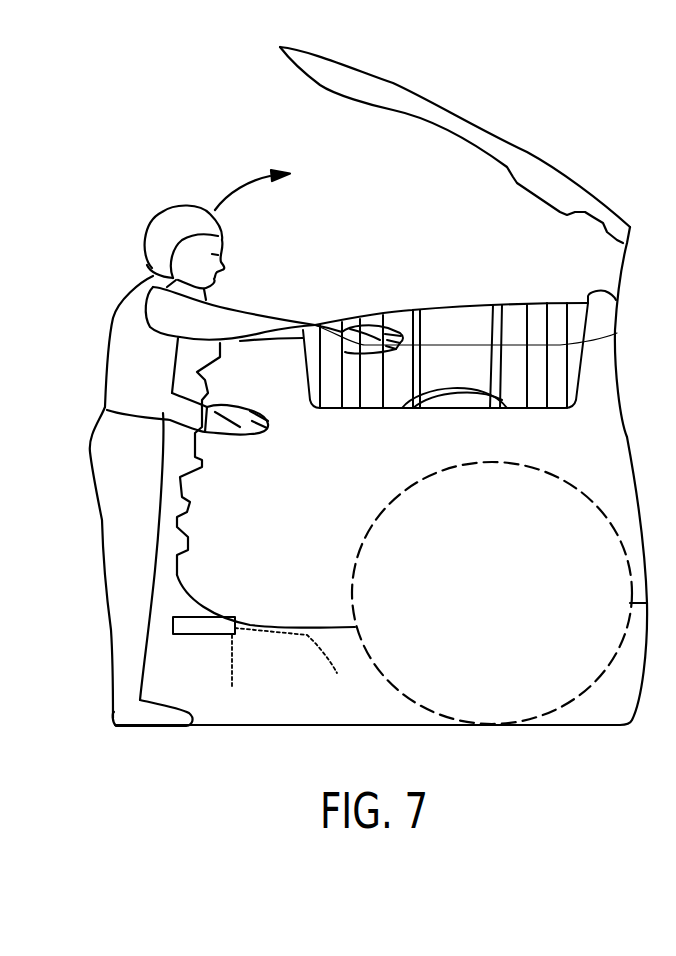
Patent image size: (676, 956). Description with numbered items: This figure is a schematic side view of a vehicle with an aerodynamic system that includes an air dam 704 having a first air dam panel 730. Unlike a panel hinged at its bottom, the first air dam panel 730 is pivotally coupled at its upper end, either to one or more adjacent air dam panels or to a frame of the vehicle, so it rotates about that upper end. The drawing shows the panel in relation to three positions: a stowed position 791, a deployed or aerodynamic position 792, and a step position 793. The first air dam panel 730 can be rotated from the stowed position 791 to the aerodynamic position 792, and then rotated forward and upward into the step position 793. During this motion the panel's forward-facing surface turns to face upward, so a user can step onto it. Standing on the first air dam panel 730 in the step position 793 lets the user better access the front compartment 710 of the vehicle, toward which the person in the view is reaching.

The air dam 704 is at (162, 577).
The front compartment 710 is at (441, 330).
The first air dam panel 730 is at (182, 637).
The stowed position 791 is at (272, 627).
The aerodynamic position 792 is at (228, 665).
The step position 793 is at (203, 623).